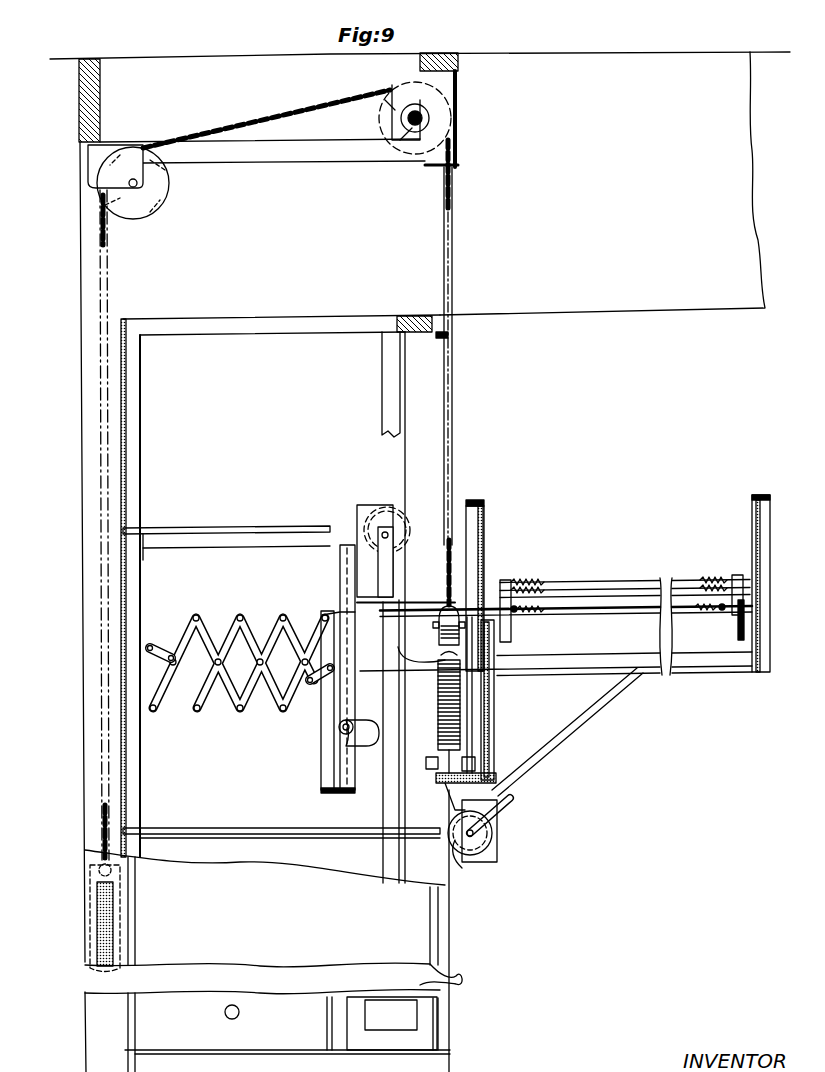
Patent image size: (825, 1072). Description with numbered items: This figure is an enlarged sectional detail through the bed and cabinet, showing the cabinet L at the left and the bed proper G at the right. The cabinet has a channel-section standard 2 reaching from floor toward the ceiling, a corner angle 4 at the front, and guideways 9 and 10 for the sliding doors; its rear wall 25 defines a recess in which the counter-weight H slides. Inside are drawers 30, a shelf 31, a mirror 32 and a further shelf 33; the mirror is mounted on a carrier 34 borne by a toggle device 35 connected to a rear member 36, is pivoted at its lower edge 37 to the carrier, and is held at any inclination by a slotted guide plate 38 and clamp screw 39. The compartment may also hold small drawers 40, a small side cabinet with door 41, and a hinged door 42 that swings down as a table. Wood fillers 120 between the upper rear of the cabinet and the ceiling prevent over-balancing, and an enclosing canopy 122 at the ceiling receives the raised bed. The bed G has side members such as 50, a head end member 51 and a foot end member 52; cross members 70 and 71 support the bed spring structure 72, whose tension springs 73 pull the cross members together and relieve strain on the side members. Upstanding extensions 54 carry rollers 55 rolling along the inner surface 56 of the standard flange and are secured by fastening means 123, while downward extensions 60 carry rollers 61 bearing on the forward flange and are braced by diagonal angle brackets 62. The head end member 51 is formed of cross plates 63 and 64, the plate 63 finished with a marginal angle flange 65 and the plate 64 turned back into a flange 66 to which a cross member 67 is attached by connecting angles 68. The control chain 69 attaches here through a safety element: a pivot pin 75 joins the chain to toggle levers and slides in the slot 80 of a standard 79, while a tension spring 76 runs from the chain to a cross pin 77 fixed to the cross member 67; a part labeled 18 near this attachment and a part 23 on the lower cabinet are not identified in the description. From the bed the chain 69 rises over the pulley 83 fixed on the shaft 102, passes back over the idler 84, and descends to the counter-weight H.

The wood fillers 120 is at (100, 103).
The enclosing canopy 122 is at (706, 295).
The idler 84 is at (168, 192).
The shaft 102 is at (400, 118).
The pulley 83 is at (385, 140).
The control cable or chain 69 is at (110, 270).
The standard 2 is at (432, 398).
The guideway 9 is at (440, 340).
The cabinet portion L is at (168, 438).
The rear wall 25 is at (122, 500).
The guideway 10 is at (405, 348).
The inner surface of inner flange 56 is at (404, 462).
The further shelf 33 is at (210, 525).
The toggle device 35 is at (235, 612).
The rear member 36 is at (155, 622).
The carrier 34 is at (323, 765).
The mirror 32 is at (344, 588).
The fastening means 123 is at (368, 620).
The pivotal connection 37 is at (345, 792).
The clamp screw 39 is at (350, 718).
The slotted guide plate 38 is at (361, 745).
The upstanding extensions 54 is at (375, 494).
The roller 55 is at (400, 520).
The reinforcing marginal angle flange 65 is at (478, 498).
The head end member 51 is at (487, 540).
The cross plate 63 is at (487, 560).
The side member 50 is at (554, 627).
The bed portion G is at (684, 683).
The cross member 70 is at (525, 632).
The tension springs 73 is at (530, 605).
The bed spring structure 72 is at (578, 605).
The cross member 71 is at (738, 630).
The foot end member 52 is at (752, 505).
The pivot pin 75 is at (438, 625).
The slot 80 is at (411, 642).
The tension spring 76 is at (437, 705).
The standard 79 is at (474, 700).
The cross plate 64 is at (492, 718).
The bolt 18 is at (475, 760).
The cross pin 77 is at (432, 757).
The cross member 67 is at (440, 783).
The connecting angles 68 is at (445, 805).
The angle brackets 62 is at (570, 740).
The flange 66 is at (500, 800).
The extensions 60 is at (495, 848).
The rollers 61 is at (456, 852).
The shelf 31 is at (240, 816).
The drawers 30 is at (265, 864).
The corner angle 4 is at (451, 1040).
The door 42 is at (273, 949).
The break line 23 is at (286, 977).
The small drawers 40 is at (287, 1029).
The side cabinet with door 41 is at (400, 1015).
The counter-weight H is at (88, 940).